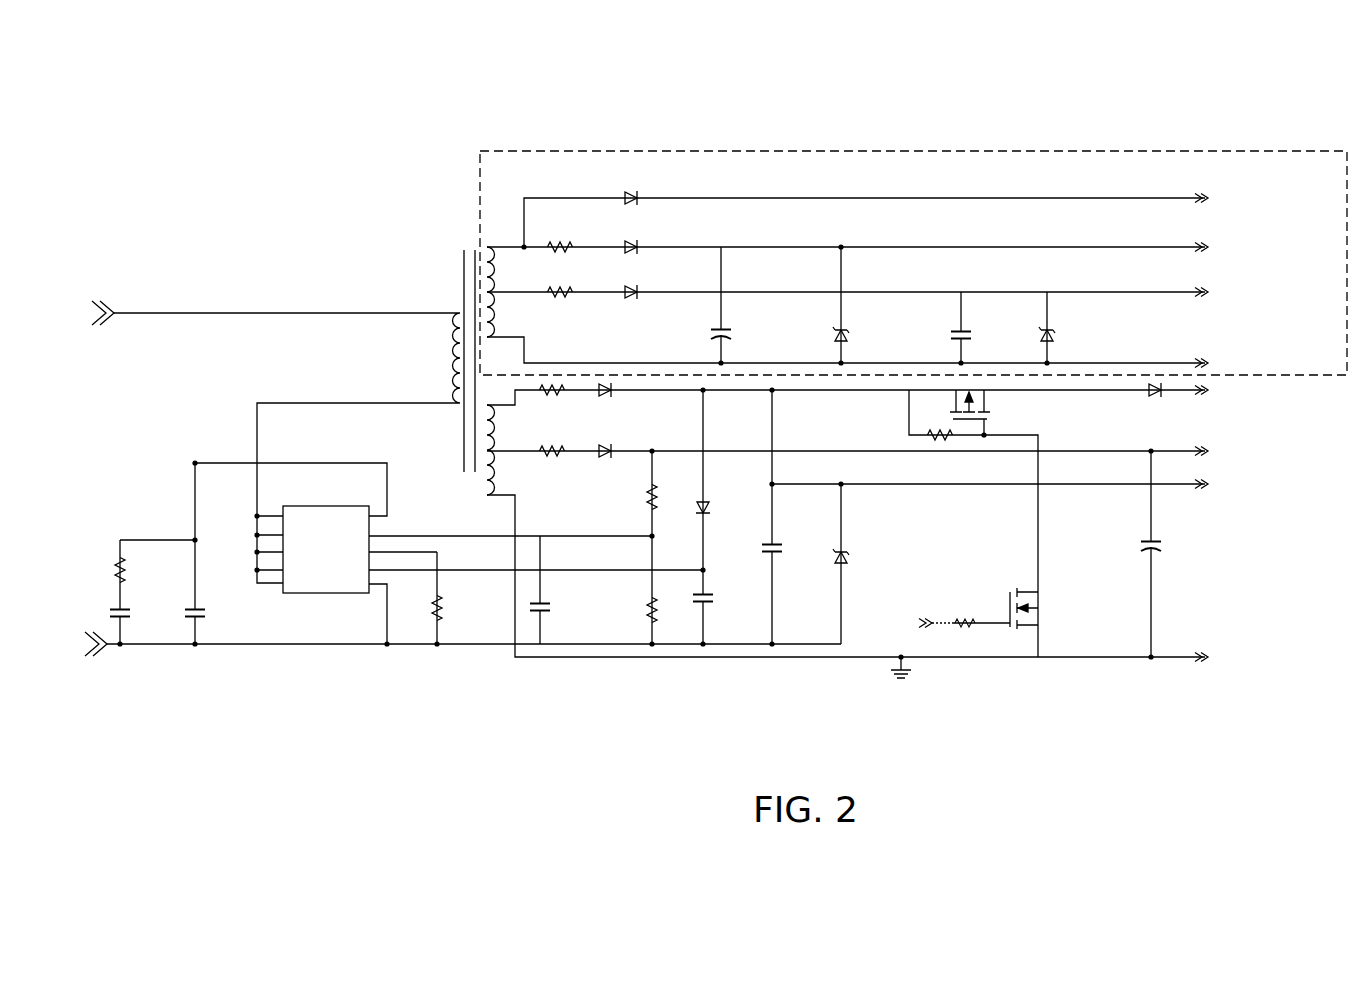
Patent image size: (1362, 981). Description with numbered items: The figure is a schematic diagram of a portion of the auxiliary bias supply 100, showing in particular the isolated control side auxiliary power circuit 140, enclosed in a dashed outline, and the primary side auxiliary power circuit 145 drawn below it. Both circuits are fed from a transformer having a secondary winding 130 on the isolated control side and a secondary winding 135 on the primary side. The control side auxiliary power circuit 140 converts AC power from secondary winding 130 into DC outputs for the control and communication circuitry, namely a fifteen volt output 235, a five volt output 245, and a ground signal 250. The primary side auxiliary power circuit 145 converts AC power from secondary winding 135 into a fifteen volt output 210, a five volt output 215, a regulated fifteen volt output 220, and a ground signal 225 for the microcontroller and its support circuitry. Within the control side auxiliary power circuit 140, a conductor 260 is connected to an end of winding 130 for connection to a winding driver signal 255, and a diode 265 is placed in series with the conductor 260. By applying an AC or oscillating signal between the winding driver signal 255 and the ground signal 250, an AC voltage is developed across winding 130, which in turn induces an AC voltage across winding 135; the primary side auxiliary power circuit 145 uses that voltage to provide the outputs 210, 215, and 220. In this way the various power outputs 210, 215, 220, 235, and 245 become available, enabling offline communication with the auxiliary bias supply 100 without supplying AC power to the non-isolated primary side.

The auxiliary bias supply 100 is at (487, 86).
The secondary winding 130 is at (474, 258).
The secondary winding 135 is at (474, 421).
The isolated control side auxiliary power circuit 140 is at (843, 149).
The primary side auxiliary power circuit 145 is at (724, 677).
The 15 volt output 210 is at (1244, 394).
The 5 volt output 215 is at (1244, 451).
The regulated 15 volt output 220 is at (1244, 484).
The ground signal 225 is at (1244, 659).
The 15 volt output 235 is at (1244, 244).
The 5 volt output 245 is at (1244, 290).
The ground signal 250 is at (1244, 352).
The winding driver signal 255 is at (1244, 199).
The conductor 260 is at (1020, 197).
The diode 265 is at (640, 204).